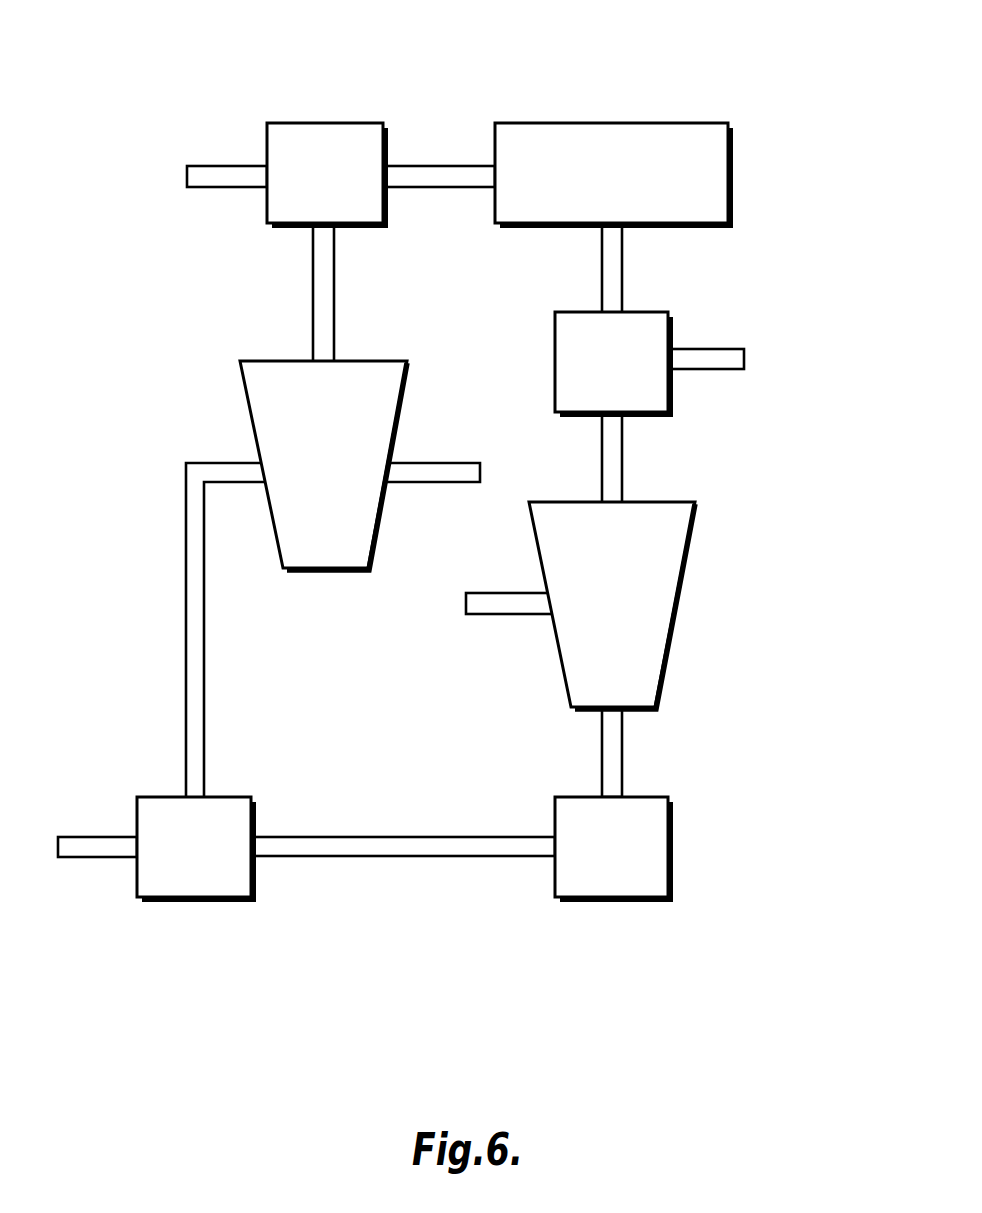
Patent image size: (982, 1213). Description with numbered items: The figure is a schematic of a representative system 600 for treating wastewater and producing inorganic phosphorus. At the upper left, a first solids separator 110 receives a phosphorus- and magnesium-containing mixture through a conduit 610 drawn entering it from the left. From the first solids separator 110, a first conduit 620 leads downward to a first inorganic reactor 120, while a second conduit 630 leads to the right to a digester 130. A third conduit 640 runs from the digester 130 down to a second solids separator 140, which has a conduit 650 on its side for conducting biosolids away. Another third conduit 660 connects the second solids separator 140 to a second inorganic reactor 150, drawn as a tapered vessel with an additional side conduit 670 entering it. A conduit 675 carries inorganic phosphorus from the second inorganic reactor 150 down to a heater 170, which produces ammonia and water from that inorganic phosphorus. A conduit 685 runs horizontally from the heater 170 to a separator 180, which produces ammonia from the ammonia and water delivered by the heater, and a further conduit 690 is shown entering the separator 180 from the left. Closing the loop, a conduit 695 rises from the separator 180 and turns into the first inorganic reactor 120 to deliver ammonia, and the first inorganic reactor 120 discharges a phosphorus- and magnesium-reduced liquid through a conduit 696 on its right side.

The system 600 is at (808, 100).
The first solids separator 110 is at (327, 175).
The first inorganic reactor 120 is at (323, 465).
The digester 130 is at (614, 175).
The second solids separator 140 is at (614, 364).
The second inorganic reactor 150 is at (612, 605).
The heater 170 is at (614, 849).
The separator 180 is at (196, 849).
The conduit 610 is at (227, 173).
The first conduit 620 is at (318, 282).
The second conduit 630 is at (440, 170).
The third conduit 640 is at (620, 278).
The conduit 650 is at (708, 357).
The third conduit 660 is at (617, 455).
The inlet stream to second separator 670 is at (483, 603).
The conduit 675 is at (617, 763).
The conduit 685 is at (423, 835).
The inlet stream to fifth unit 690 is at (93, 832).
The conduit 695 is at (190, 630).
The conduit 696 is at (445, 468).